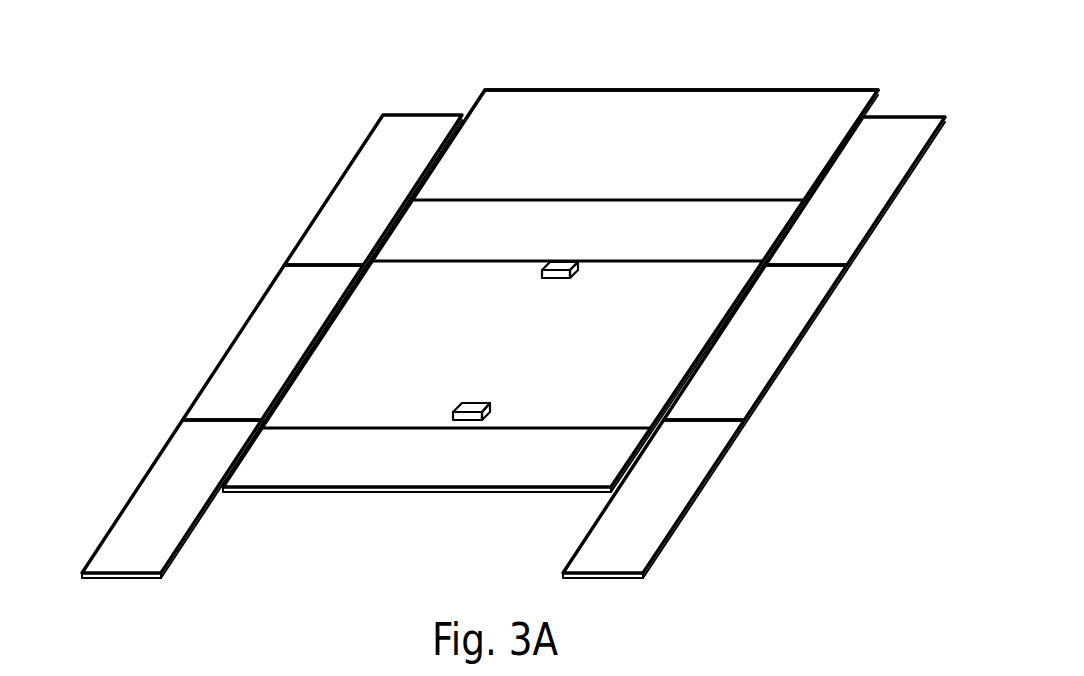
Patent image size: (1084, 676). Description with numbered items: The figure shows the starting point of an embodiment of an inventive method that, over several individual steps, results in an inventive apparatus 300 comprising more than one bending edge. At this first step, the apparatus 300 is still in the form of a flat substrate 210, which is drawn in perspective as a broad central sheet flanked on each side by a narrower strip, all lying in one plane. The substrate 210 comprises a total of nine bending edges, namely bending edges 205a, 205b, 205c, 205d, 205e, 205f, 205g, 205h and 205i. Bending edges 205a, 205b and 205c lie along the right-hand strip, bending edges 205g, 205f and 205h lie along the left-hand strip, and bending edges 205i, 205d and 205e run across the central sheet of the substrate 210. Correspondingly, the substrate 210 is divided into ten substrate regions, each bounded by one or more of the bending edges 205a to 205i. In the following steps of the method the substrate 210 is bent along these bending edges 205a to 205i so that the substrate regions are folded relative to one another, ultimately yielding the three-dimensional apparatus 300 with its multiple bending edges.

The apparatus 300 is at (255, 180).
The substrate 210 is at (550, 246).
The bending edge 205a is at (798, 266).
The bending edge 205b is at (705, 357).
The bending edge 205c is at (698, 422).
The bending edge 205d is at (422, 263).
The bending edge 205e is at (568, 427).
The bending edge 205f is at (287, 382).
The bending edge 205g is at (312, 266).
The bending edge 205h is at (205, 421).
The bending edge 205i is at (597, 199).